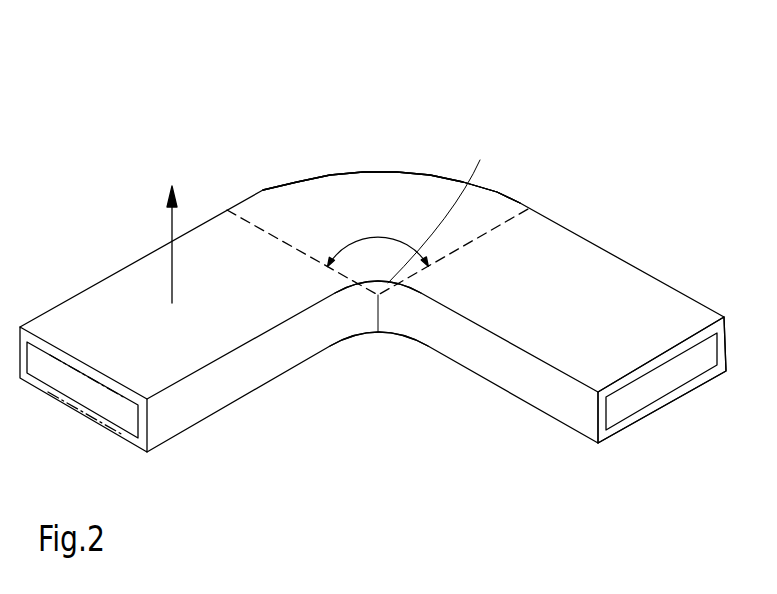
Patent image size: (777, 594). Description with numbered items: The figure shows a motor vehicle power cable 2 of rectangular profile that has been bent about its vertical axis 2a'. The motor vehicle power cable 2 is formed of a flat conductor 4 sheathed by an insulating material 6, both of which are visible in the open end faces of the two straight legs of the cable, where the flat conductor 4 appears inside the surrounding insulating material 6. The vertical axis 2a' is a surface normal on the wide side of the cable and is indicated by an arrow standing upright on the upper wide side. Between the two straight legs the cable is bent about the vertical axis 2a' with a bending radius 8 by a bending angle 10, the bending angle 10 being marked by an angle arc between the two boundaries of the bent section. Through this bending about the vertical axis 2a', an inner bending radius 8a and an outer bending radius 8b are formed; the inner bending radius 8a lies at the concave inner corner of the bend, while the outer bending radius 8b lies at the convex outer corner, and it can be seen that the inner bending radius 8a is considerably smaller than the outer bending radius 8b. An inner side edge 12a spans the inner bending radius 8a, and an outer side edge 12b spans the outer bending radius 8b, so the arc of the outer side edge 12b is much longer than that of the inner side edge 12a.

The motor vehicle power cable 2 is at (610, 155).
The vertical axis 2a' is at (200, 244).
The flat conductor 4 is at (667, 380).
The insulating material 6 is at (607, 435).
The bending radius 8 is at (405, 377).
The inner bending radius 8a is at (377, 340).
The outer bending radius 8b is at (397, 163).
The bending angle 10 is at (377, 237).
The inner side edge 12a is at (416, 213).
The outer side edge 12b is at (298, 180).